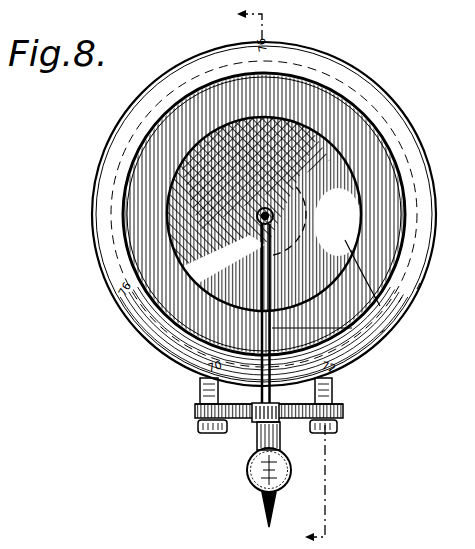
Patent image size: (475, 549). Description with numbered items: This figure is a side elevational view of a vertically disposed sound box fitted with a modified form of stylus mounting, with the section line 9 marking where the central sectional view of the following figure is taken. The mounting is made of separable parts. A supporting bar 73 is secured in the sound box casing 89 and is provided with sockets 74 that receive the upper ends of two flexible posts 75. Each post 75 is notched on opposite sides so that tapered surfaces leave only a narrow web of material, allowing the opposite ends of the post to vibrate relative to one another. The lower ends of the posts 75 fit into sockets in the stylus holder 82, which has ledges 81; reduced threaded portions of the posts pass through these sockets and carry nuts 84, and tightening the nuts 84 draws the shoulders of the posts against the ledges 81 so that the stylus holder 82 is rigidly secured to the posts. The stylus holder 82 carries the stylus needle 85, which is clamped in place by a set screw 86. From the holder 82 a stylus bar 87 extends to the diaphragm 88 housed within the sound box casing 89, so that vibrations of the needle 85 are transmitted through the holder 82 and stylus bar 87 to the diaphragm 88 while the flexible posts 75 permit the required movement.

The section line 9— 9 is at (292, 275).
The supporting bar 73 is at (337, 381).
The sockets 74 is at (200, 383).
The flexible posts 75 is at (200, 400).
The ledges 81 is at (343, 411).
The stylus holder 82 is at (237, 419).
The nuts 84 is at (198, 428).
The stylus needle 85 is at (265, 507).
The set screw 86 is at (247, 472).
The stylus bar 87 is at (385, 330).
The diaphragm 88 is at (402, 297).
The sound box casing 89 is at (420, 283).